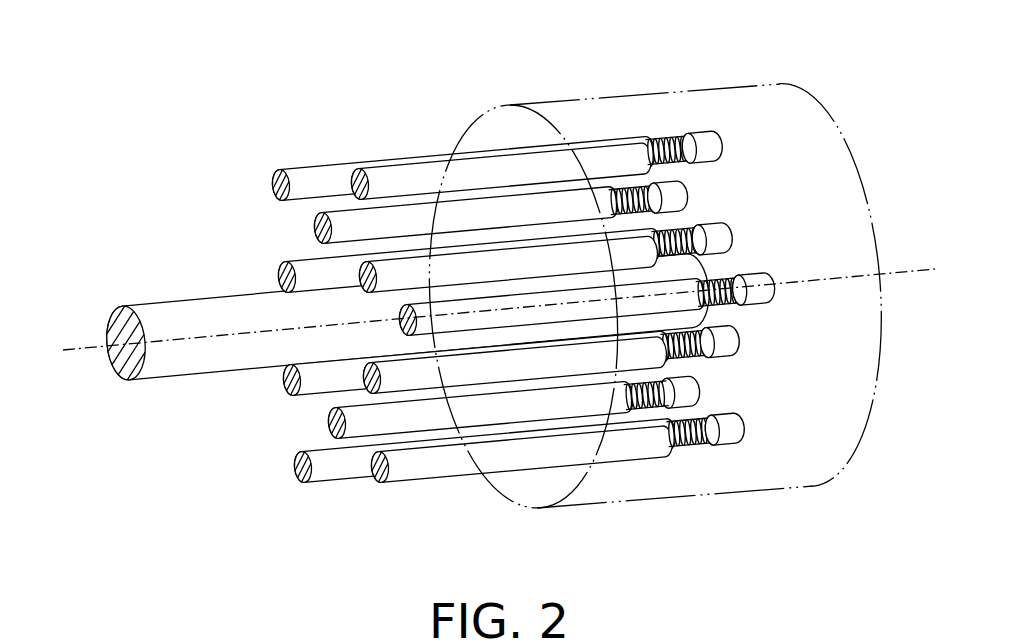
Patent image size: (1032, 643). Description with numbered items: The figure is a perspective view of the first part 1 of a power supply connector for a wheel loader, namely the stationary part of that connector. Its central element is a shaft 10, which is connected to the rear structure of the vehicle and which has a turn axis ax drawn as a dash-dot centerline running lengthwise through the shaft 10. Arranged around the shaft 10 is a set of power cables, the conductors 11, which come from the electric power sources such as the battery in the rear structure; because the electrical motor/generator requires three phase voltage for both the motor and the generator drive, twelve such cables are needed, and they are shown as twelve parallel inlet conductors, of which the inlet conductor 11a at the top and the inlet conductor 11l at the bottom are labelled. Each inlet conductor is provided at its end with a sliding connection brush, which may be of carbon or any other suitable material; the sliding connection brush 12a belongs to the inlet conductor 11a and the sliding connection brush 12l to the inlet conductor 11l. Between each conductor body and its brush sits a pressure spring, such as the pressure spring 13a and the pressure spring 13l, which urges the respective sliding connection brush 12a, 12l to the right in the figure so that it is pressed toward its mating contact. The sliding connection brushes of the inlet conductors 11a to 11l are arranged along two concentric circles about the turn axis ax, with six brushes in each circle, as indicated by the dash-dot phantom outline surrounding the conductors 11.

The first part 1 is at (398, 72).
The shaft 10 is at (197, 300).
The conductors 11 is at (384, 497).
The inlet conductor 11a is at (320, 166).
The inlet conductor 11l is at (298, 480).
The sliding connection brush 12a is at (690, 139).
The sliding connection brush 12l is at (697, 452).
The pressure spring 13a is at (657, 146).
The pressure spring 13l is at (620, 388).
The turn axis ax is at (64, 349).